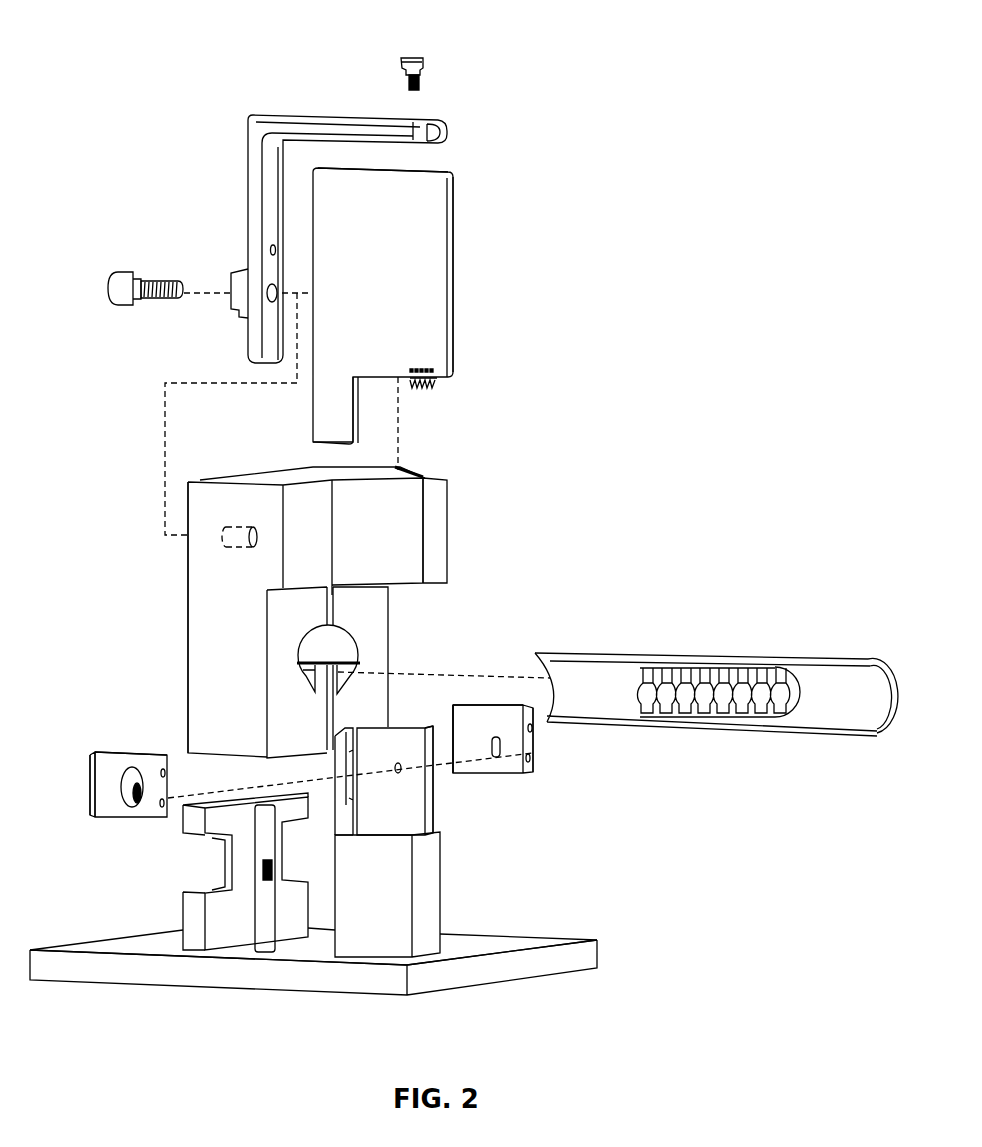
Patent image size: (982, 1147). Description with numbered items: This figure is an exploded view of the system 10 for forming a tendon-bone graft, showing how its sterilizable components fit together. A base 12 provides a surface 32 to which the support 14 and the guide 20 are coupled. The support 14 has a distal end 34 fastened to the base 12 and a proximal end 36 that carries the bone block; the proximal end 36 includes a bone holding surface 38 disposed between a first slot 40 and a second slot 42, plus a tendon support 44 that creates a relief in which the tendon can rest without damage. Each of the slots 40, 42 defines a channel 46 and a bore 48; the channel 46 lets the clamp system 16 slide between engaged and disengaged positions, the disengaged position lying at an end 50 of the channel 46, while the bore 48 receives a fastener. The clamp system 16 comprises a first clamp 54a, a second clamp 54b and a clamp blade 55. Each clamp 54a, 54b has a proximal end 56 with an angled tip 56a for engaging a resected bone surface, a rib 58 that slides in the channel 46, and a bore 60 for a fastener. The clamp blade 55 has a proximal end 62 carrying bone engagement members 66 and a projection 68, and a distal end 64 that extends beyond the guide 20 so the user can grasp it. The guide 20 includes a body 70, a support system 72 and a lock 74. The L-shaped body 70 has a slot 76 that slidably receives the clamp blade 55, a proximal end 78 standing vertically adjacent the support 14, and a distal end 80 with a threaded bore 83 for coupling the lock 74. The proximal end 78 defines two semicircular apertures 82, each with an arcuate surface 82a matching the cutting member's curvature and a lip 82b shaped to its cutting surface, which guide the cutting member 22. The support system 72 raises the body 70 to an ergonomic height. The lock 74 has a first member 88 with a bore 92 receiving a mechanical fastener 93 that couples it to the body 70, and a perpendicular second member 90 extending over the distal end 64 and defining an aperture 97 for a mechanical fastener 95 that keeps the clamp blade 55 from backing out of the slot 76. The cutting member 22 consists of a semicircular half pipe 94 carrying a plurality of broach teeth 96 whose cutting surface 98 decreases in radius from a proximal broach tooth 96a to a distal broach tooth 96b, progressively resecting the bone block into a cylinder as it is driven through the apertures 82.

The system 10 is at (160, 55).
The base 12 is at (330, 967).
The support 14 is at (447, 882).
The clamp system 16 is at (399, 297).
The guide 20 is at (320, 602).
The cutting member 22 is at (716, 680).
The surface 32 is at (483, 937).
The distal end 34 is at (373, 963).
The proximal end 36 is at (450, 731).
The bone holding surface 38 is at (430, 727).
The first slot 40 is at (427, 748).
The second slot 42 is at (433, 817).
The tendon support 44 is at (358, 732).
The channel 46 is at (321, 803).
The bore 48 is at (398, 773).
The end 50 is at (348, 820).
The first clamp 54a is at (88, 783).
The second clamp 54b is at (542, 757).
The clamp blade 55 is at (463, 205).
The proximal end 56 is at (145, 746).
The angled tip 56a is at (120, 750).
The rib 58 is at (92, 768).
The bore 60 is at (132, 807).
The proximal end 62 is at (367, 384).
The distal end 64 is at (437, 185).
The bone engagement member 66 is at (436, 394).
The projection 68 is at (325, 410).
The body 70 is at (185, 565).
The support system 72 is at (175, 920).
The lock 74 is at (334, 206).
The slot 76 is at (423, 480).
The proximal end 78 is at (279, 672).
The distal end 80 is at (233, 478).
The apertures 82 is at (327, 673).
The arcuate surface 82a is at (305, 645).
The lip 82b is at (305, 670).
The bore 83 is at (238, 530).
The first member 88 is at (247, 180).
The second member 90 is at (350, 114).
The bore 92 is at (268, 293).
The mechanical fastener 93 is at (125, 272).
The half pipe 94 is at (573, 655).
The mechanical fastener 95 is at (413, 54).
The broach teeth 96 is at (719, 688).
The proximal broach tooth 96a is at (645, 668).
The distal broach tooth 96b is at (777, 668).
The aperture 97 is at (448, 126).
The cutting surface 98 is at (650, 693).